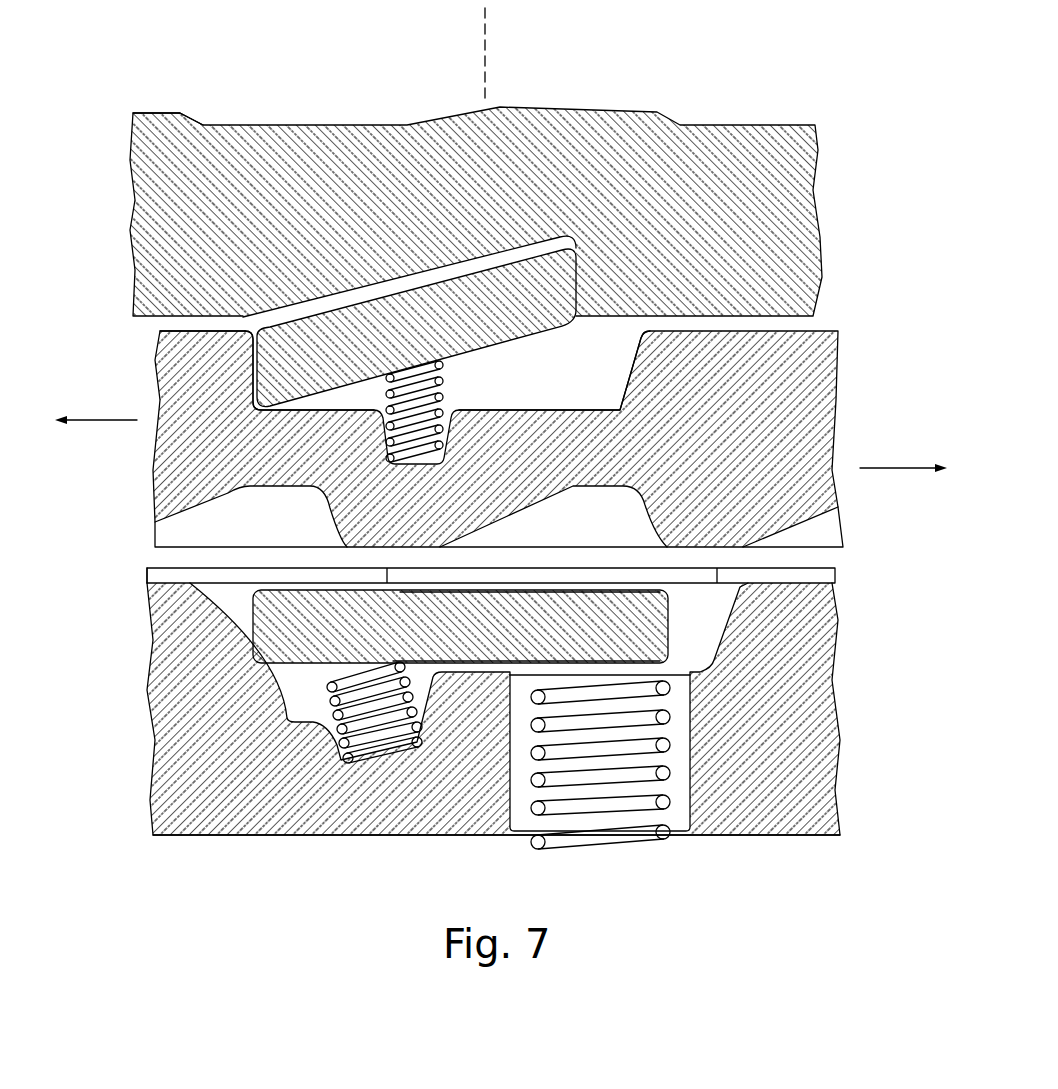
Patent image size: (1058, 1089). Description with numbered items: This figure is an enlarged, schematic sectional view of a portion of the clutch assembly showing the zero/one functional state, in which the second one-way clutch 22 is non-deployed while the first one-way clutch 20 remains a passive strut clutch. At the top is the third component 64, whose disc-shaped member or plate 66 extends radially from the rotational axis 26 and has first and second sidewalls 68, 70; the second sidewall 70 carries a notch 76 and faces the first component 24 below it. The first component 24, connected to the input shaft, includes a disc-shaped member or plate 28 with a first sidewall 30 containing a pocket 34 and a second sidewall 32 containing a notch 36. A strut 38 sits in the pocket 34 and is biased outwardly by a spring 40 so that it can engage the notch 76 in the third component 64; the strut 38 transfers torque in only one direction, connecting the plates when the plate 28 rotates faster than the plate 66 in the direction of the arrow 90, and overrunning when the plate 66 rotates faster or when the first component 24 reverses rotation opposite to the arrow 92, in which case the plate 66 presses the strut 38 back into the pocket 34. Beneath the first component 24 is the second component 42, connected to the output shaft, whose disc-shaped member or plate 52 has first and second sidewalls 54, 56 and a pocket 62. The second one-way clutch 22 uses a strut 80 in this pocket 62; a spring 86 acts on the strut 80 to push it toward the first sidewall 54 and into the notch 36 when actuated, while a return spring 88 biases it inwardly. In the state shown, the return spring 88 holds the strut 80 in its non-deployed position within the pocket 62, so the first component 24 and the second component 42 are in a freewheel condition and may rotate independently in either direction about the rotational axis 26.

The first one-way clutch 20 is at (784, 323).
The second one-way clutch 22 is at (703, 583).
The first component 24 is at (855, 424).
The rotational axis 26 is at (485, 68).
The disc-shaped member or plate 28 is at (772, 388).
The first sidewall 30 is at (165, 322).
The second sidewall 32 is at (392, 548).
The pocket 34 is at (578, 392).
The notch 36 is at (598, 522).
The strut 38 is at (547, 326).
The spring 40 is at (446, 397).
The second component 42 is at (860, 680).
The disc-shaped member or plate 52 is at (810, 742).
The first sidewall 54 is at (164, 585).
The second sidewall 56 is at (292, 836).
The pocket 62 is at (710, 633).
The third component 64 is at (848, 184).
The disc-shaped member or plate 66 is at (755, 208).
The first sidewall 68 is at (164, 122).
The second sidewall 70 is at (190, 315).
The notch 76 is at (442, 270).
The strut 80 is at (490, 653).
The spring 86 is at (533, 753).
The return spring 88 is at (343, 742).
The arrow 90 is at (903, 470).
The arrow 92 is at (84, 421).